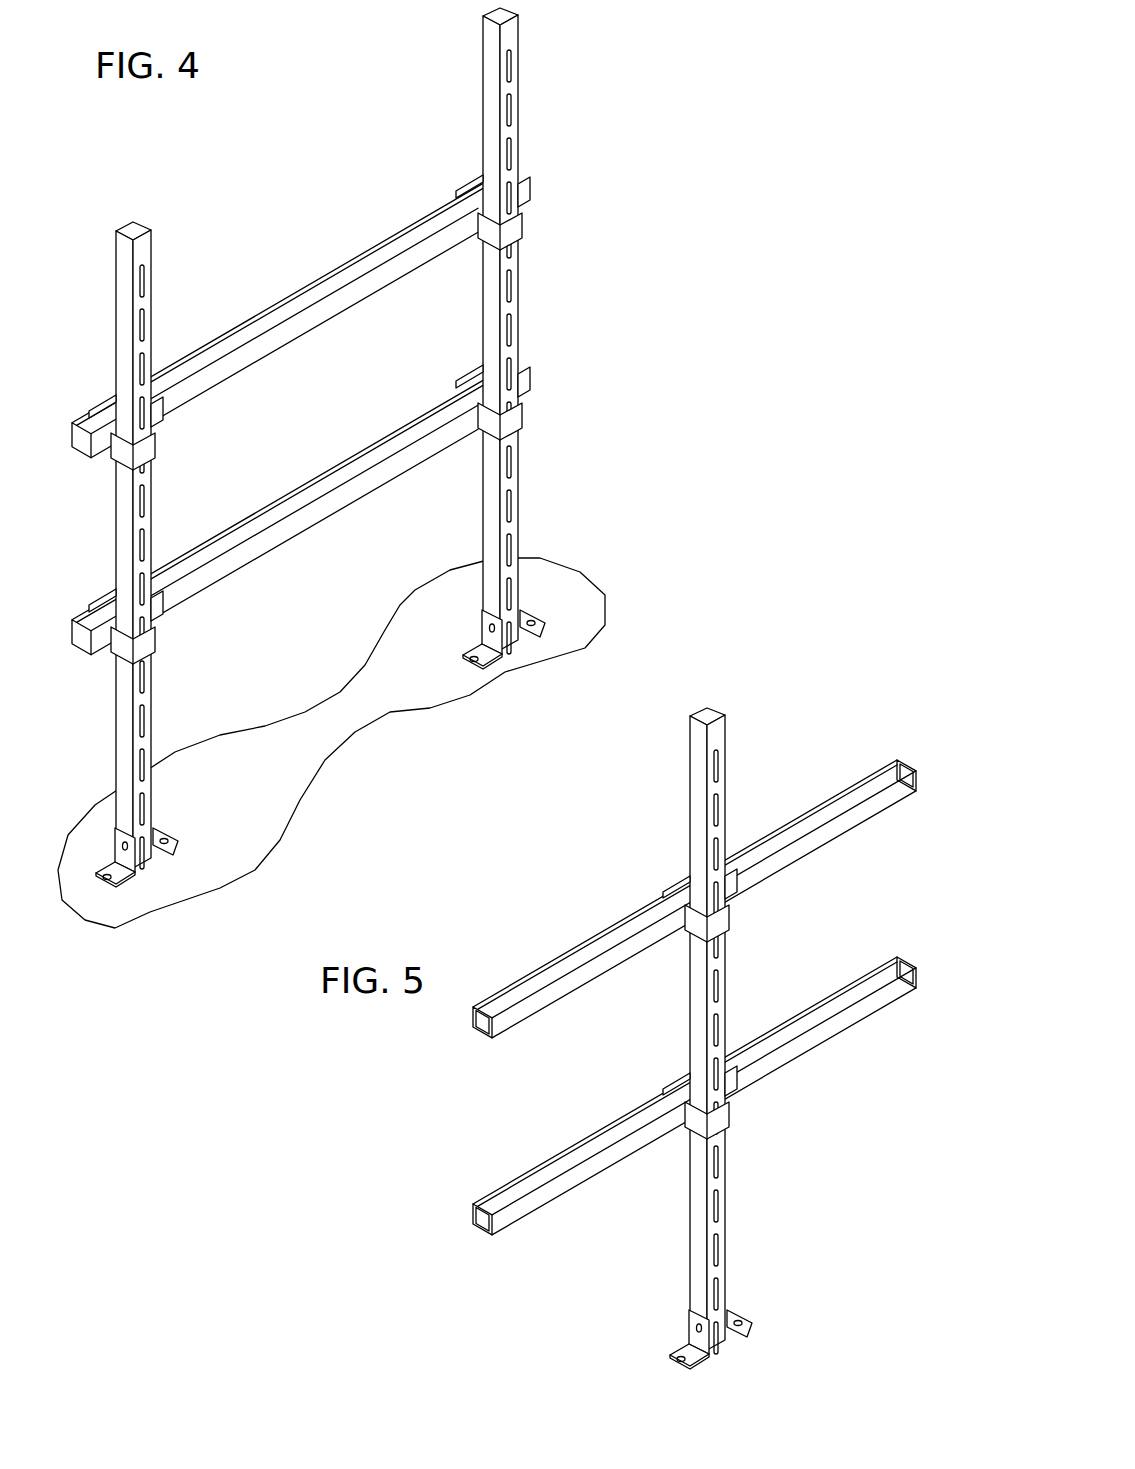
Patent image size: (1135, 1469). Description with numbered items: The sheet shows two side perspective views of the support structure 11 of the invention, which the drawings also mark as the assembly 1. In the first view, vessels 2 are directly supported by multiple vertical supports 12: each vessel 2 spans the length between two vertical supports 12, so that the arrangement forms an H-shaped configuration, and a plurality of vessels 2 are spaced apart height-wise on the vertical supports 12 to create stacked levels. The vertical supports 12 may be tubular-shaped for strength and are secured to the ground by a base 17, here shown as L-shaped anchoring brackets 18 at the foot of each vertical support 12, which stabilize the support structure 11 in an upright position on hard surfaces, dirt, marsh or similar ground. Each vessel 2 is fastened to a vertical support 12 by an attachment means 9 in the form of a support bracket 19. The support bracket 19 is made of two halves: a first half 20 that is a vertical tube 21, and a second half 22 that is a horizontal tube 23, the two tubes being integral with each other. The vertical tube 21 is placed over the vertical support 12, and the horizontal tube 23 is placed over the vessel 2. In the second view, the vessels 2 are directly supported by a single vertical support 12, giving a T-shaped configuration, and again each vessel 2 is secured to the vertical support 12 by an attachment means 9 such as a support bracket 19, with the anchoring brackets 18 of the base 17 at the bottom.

In FIG. 4, the barrier system 1 is at (604, 134).
In FIG. 5, the barrier system 1 is at (833, 743).
In FIG. 4, the vessel 2 is at (305, 297).
In FIG. 5, the vessel 2 is at (592, 943).
In FIG. 4, the attachment means 9 is at (333, 419).
In FIG. 5, the attachment means 9 is at (703, 994).
In FIG. 4, the support structure 11 is at (530, 288).
In FIG. 5, the support structure 11 is at (740, 727).
In FIG. 4, the vertical support 12 is at (518, 83).
In FIG. 5, the vertical support 12 is at (727, 1202).
In FIG. 4, the base 17 is at (403, 728).
In FIG. 5, the base 17 is at (717, 1319).
In FIG. 4, the anchoring bracket 18 is at (547, 623).
In FIG. 5, the anchoring bracket 18 is at (740, 1318).
In FIG. 4, the support bracket 19 is at (333, 419).
In FIG. 5, the support bracket 19 is at (703, 994).
In FIG. 4, the first half 20 is at (333, 419).
In FIG. 5, the first half 20 is at (703, 994).
In FIG. 4, the vertical tube 21 is at (333, 419).
In FIG. 5, the vertical tube 21 is at (703, 994).
In FIG. 4, the second half 22 is at (333, 419).
In FIG. 5, the second half 22 is at (703, 994).
In FIG. 4, the horizontal tube 23 is at (112, 400).
In FIG. 5, the horizontal tube 23 is at (687, 893).